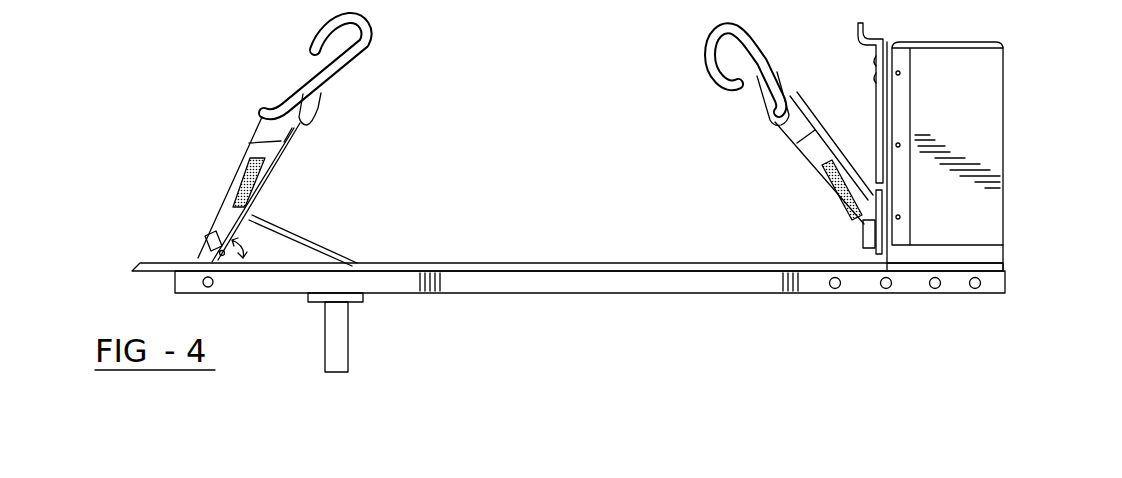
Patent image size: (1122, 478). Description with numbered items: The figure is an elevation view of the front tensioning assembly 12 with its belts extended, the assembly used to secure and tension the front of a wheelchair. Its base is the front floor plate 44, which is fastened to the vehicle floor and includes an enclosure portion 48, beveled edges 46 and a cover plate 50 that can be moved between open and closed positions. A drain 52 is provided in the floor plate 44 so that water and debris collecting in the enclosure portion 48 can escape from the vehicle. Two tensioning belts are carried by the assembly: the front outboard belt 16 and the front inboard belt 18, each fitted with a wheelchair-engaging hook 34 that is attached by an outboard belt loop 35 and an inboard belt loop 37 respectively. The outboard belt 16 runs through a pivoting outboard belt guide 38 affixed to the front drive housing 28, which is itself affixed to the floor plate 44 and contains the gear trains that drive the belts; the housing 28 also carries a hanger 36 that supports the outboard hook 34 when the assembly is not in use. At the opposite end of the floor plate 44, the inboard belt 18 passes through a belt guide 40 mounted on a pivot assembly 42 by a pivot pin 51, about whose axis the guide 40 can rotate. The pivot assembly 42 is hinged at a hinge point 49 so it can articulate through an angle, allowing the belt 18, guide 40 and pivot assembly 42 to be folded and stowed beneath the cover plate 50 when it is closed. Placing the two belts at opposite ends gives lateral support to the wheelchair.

The front tensioning assembly 12 is at (1092, 77).
The front outboard belt 16 is at (815, 160).
The front inboard belt 18 is at (258, 172).
The front drive housing 28 is at (997, 218).
The wheelchair-engaging hook 34 is at (371, 42).
The outboard belt loop 35 is at (783, 133).
The hanger 36 is at (865, 25).
The inboard belt loop 37 is at (289, 137).
The outboard belt guide 38 is at (870, 218).
The belt guide 40 is at (255, 208).
The pivot assembly 42 is at (207, 240).
The front floor plate 44 is at (608, 262).
The beveled edges 46 is at (658, 270).
The enclosure portion 48 is at (470, 287).
The hinge point 49 is at (213, 286).
The cover plate 50 is at (414, 224).
The pivot pin 51 is at (212, 233).
The drain 52 is at (333, 350).